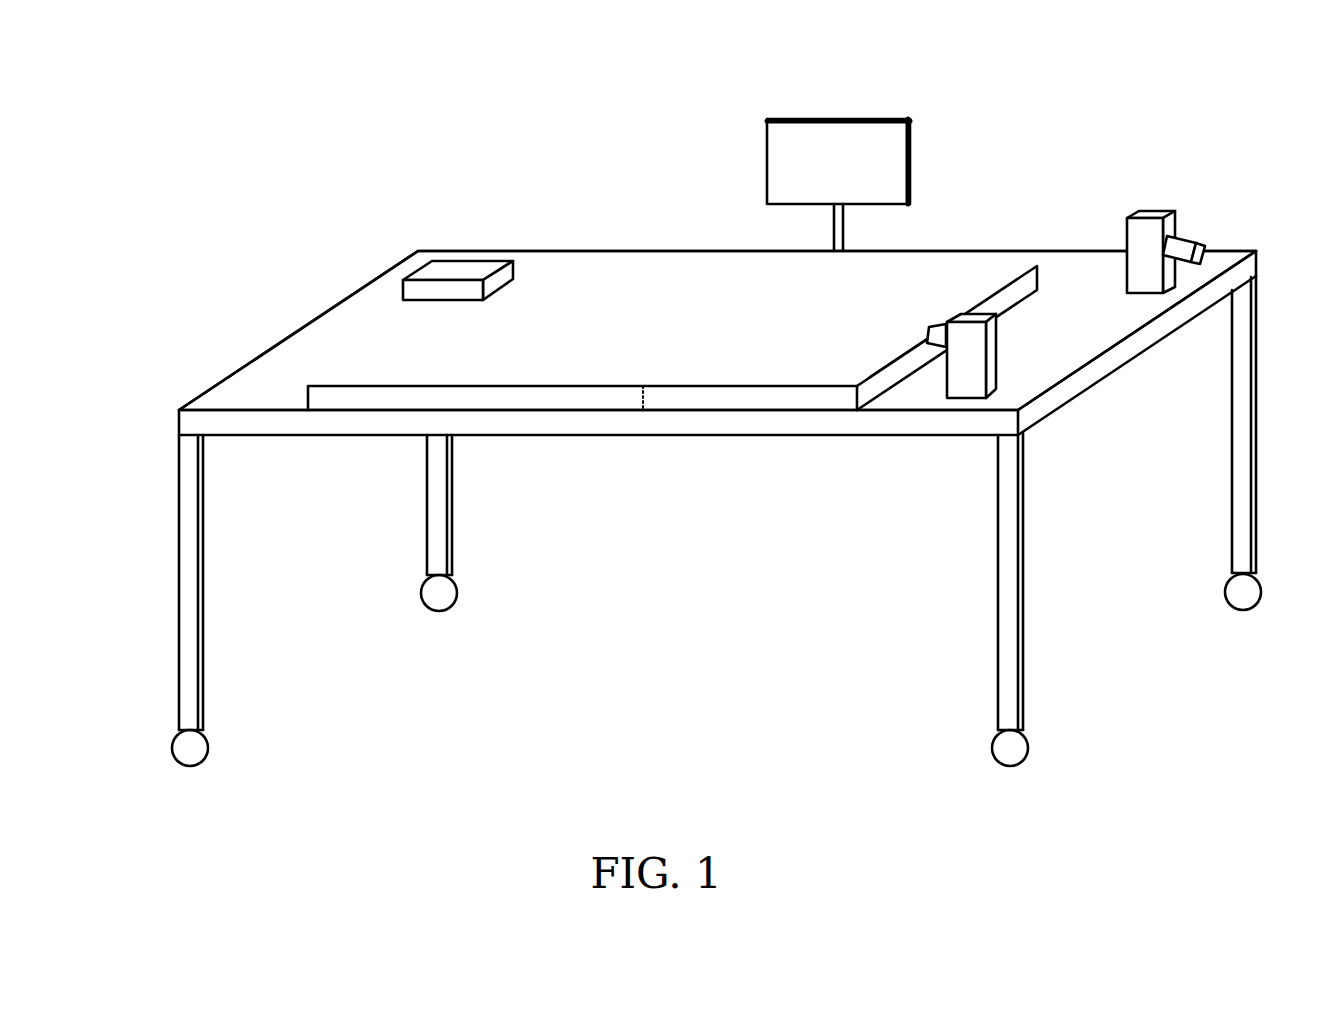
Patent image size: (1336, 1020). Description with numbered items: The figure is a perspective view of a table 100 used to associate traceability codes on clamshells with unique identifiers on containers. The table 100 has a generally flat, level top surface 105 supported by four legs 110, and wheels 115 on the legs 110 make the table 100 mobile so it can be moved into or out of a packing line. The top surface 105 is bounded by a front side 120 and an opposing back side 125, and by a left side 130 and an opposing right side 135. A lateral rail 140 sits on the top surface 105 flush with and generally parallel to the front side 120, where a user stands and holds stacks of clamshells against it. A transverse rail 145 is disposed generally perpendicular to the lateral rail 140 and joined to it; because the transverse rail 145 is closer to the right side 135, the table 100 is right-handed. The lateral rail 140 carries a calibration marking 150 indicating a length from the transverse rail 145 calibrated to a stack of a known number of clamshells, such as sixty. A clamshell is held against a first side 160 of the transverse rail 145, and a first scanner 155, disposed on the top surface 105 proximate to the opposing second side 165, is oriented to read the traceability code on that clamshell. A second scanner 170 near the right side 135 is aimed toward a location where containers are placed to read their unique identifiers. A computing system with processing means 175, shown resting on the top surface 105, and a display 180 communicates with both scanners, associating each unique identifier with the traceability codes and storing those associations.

The table 100 is at (695, 415).
The top surface 105 is at (385, 315).
The legs 110 is at (995, 578).
The wheels 115 is at (990, 748).
The front side 120 is at (685, 425).
The back side 125 is at (612, 250).
The left side 130 is at (305, 327).
The right side 135 is at (1086, 377).
The lateral rail 140 is at (378, 396).
The transverse rail 145 is at (1034, 268).
The calibration marking 150 is at (648, 398).
The first scanner 155 is at (963, 387).
The first side 160 is at (992, 275).
The second side 165 is at (892, 372).
The second scanner 170 is at (1149, 218).
The processing means 175 is at (465, 270).
The display 180 is at (797, 119).